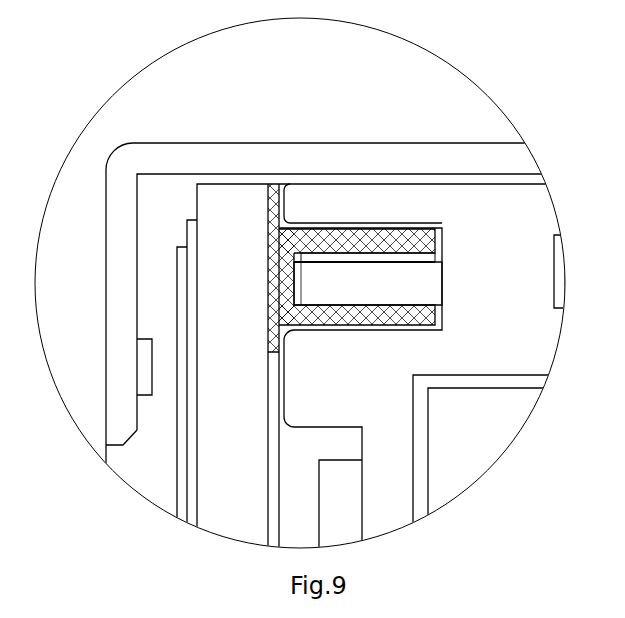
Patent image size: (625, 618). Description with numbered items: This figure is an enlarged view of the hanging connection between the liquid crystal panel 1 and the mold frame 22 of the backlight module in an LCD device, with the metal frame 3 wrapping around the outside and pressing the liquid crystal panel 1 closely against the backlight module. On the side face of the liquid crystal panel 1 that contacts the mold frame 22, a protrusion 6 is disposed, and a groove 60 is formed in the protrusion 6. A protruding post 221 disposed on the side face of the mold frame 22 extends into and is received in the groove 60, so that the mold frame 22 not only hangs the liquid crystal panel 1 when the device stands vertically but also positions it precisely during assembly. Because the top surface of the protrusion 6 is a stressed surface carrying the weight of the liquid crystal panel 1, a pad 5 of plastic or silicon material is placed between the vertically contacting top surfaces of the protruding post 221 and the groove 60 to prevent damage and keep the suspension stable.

The liquid crystal panel 1 is at (207, 378).
The metal frame 3 is at (128, 198).
The pad 5 is at (392, 253).
The protrusion 6 is at (315, 232).
The groove 60 is at (295, 248).
The mold frame 22 is at (510, 227).
The protruding post 221 is at (403, 272).